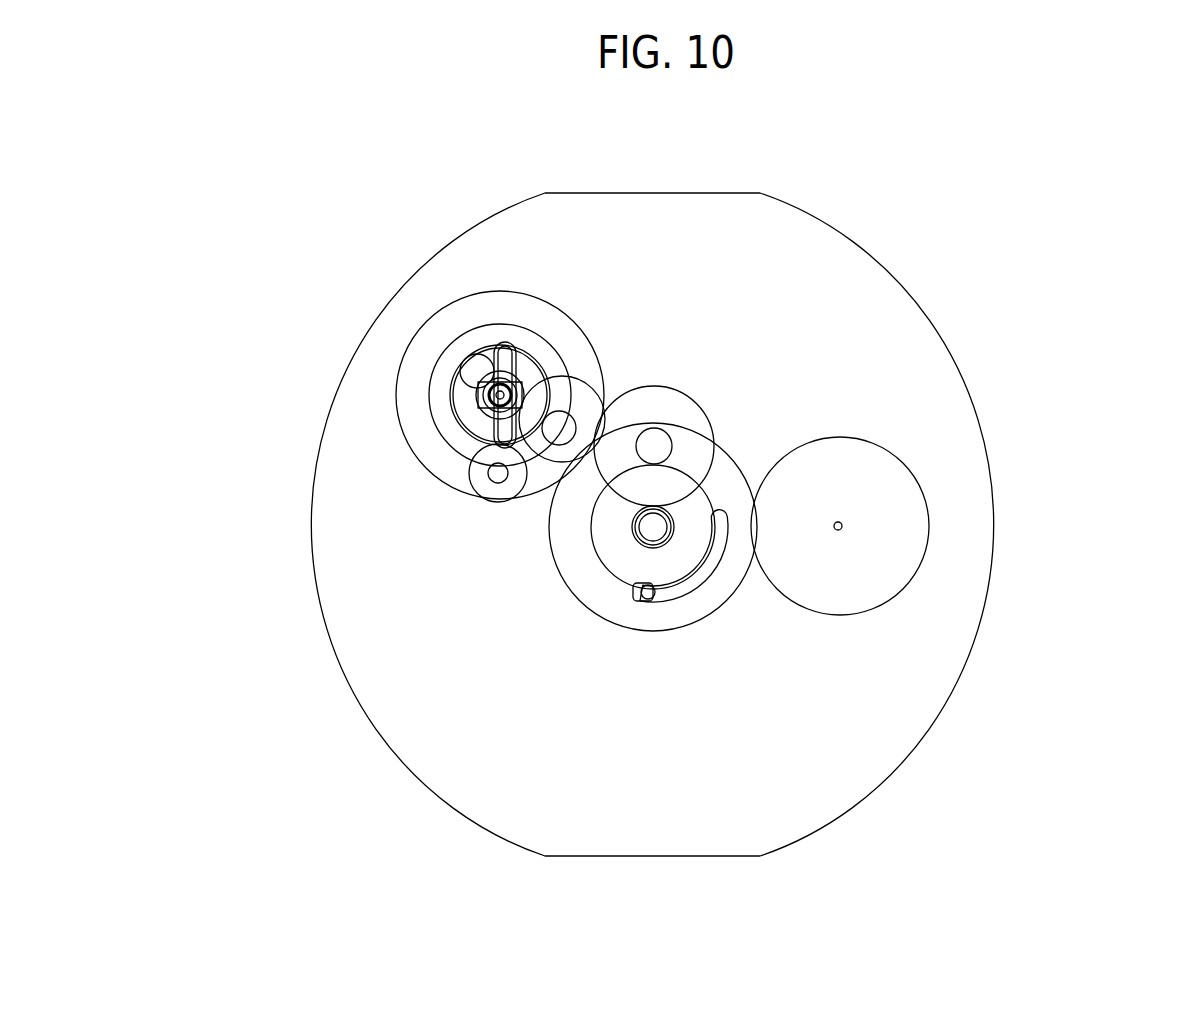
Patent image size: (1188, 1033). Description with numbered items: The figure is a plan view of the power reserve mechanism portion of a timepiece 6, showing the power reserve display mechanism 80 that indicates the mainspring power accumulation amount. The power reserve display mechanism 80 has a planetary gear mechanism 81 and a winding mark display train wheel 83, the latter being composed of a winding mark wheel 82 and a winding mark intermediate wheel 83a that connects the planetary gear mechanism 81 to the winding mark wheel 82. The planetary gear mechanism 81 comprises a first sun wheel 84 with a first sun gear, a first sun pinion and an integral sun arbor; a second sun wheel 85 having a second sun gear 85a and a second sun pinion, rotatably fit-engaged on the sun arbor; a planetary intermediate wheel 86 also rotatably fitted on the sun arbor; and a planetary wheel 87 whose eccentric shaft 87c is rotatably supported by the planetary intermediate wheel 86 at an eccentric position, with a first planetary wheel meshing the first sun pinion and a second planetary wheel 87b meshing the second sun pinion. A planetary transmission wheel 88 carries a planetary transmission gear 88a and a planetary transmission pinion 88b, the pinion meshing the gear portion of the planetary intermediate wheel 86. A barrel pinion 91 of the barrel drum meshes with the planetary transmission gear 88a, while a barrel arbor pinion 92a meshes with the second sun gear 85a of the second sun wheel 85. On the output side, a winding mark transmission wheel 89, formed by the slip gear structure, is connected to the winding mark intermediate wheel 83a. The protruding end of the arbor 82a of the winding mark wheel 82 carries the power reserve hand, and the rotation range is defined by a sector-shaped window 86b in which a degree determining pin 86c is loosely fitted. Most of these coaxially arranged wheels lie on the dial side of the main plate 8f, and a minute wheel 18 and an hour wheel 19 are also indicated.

The timepiece 6 is at (1077, 353).
The main plate 8f is at (975, 527).
The minute wheel 18 is at (686, 408).
The hour wheel 19 is at (625, 553).
The power reserve display mechanism 80 is at (1037, 210).
The planetary gear mechanism 81 is at (834, 180).
The winding mark wheel 82 is at (882, 482).
The arbor of the winding mark wheel 82a is at (842, 532).
The winding mark display train wheel 83 is at (920, 652).
The winding mark intermediate wheel 83a is at (675, 613).
The first sun wheel 84 is at (574, 396).
The second sun wheel 85 is at (470, 350).
The second sun gear 85a is at (470, 347).
The planetary intermediate wheel 86 is at (467, 408).
The sector-shaped window 86b is at (710, 575).
The degree determining pin 86c is at (643, 600).
The planetary wheel 87 is at (487, 345).
The second planetary wheel 87b is at (478, 392).
The eccentric shaft 87c is at (472, 372).
The planetary transmission wheel 88 is at (604, 401).
The planetary transmission gear 88a is at (586, 398).
The planetary transmission pinion 88b is at (550, 485).
The winding mark transmission wheel 89 is at (417, 389).
The barrel pinion 91 is at (472, 494).
The barrel arbor pinion 92a is at (490, 475).